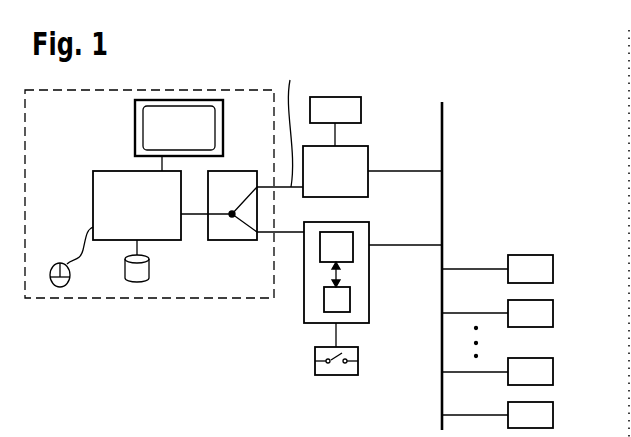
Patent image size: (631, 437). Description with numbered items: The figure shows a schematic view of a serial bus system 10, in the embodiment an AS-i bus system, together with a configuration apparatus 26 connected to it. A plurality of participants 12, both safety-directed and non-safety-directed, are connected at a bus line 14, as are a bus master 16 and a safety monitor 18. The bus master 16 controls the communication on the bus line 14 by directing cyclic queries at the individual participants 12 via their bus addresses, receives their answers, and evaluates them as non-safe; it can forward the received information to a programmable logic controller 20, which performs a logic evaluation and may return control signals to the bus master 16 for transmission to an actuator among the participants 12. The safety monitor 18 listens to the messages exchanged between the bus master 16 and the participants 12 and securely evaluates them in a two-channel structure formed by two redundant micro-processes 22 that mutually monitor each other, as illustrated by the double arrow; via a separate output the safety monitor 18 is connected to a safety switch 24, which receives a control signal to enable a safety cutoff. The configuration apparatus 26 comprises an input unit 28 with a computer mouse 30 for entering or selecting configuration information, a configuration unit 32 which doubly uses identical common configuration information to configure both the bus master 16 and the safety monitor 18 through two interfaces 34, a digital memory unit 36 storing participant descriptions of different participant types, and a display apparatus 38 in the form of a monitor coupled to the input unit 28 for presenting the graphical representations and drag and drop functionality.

The serial bus system 10 is at (452, 66).
The participants 12 is at (545, 268).
The bus line 14 is at (443, 200).
The bus master 16 is at (362, 160).
The safety monitor 18 is at (309, 313).
The programmable logic controller 20 is at (335, 101).
The redundant micro-processes 22 is at (341, 299).
The safety switch 24 is at (340, 373).
The configuration apparatus 26 is at (85, 301).
The input unit 28 is at (110, 198).
The computer mouse 30 is at (55, 287).
The configuration unit 32 is at (232, 234).
The interfaces 34 is at (301, 127).
The digital memory unit 36 is at (137, 280).
The display apparatus 38 is at (178, 113).